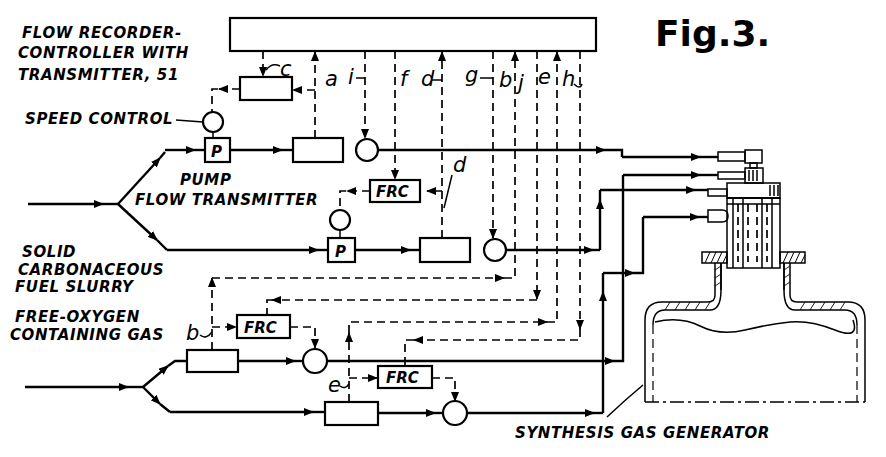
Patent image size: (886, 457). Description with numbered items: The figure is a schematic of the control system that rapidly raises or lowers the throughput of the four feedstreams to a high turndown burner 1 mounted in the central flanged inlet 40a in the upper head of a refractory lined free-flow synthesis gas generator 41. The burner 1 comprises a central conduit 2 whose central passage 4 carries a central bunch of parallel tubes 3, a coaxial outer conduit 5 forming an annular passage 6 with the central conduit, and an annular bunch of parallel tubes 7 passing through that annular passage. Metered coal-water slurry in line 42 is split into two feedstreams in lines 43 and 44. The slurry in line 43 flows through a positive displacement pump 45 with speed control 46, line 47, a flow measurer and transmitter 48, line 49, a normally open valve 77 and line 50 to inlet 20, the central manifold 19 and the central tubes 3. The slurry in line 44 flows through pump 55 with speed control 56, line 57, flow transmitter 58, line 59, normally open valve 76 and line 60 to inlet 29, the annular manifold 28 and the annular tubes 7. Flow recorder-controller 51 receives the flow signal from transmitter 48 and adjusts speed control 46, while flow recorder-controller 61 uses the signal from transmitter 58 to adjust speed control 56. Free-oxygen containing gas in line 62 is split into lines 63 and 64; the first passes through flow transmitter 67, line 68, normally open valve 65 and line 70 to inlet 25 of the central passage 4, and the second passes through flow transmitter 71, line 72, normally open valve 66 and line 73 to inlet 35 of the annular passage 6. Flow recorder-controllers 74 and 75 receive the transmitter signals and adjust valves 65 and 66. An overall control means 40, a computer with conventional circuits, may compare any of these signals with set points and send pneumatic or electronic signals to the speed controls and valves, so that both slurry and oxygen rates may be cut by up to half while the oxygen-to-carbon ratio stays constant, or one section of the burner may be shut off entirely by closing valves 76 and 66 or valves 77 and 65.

The burner 1 is at (782, 216).
The central conduit 2 is at (765, 172).
The central bunch of parallel tubes 3 is at (781, 187).
The central passage 4 is at (762, 294).
The outer conduit 5 is at (782, 251).
The annular passage 6 is at (727, 240).
The annular bunch of parallel tubes 7 is at (782, 233).
The central manifold 19 is at (760, 150).
The inlet 20 is at (746, 150).
The inlet 25 is at (710, 157).
The annular manifold 28 is at (782, 199).
The inlet 29 is at (708, 193).
The inlet 35 is at (708, 218).
The control means 40 is at (597, 43).
The central flanged inlet 40a is at (716, 266).
The synthesis gas generator 41 is at (660, 302).
The line 42 is at (44, 205).
The line 43 is at (145, 177).
The line 44 is at (136, 226).
The positive displacement pump 45 is at (204, 147).
The speed control 46 is at (223, 118).
The line 47 is at (248, 143).
The flow measurer and transmitter 48 is at (313, 108).
The line 49 is at (358, 140).
The line 50 is at (615, 146).
The flow recorder-controller 51 is at (240, 80).
The positive displacement pump 55 is at (326, 247).
The speed control 56 is at (352, 217).
The line 57 is at (392, 237).
The flow measurer and transmitter 58 is at (428, 237).
The line 59 is at (487, 240).
The line 60 is at (603, 190).
The flow recorder-controller 61 is at (398, 174).
The line 62 is at (79, 389).
The line 63 is at (156, 373).
The line 64 is at (160, 407).
The valve 65 is at (305, 371).
The valve 66 is at (468, 404).
The flow transmitter 67 is at (203, 373).
The line 68 is at (246, 364).
The line 70 is at (550, 362).
The flow transmitter 71 is at (340, 426).
The line 72 is at (403, 415).
The line 73 is at (590, 411).
The flow recorder-controller 74 is at (262, 300).
The flow recorder-controller 75 is at (435, 371).
The valve 76 is at (493, 222).
The valve 77 is at (358, 163).